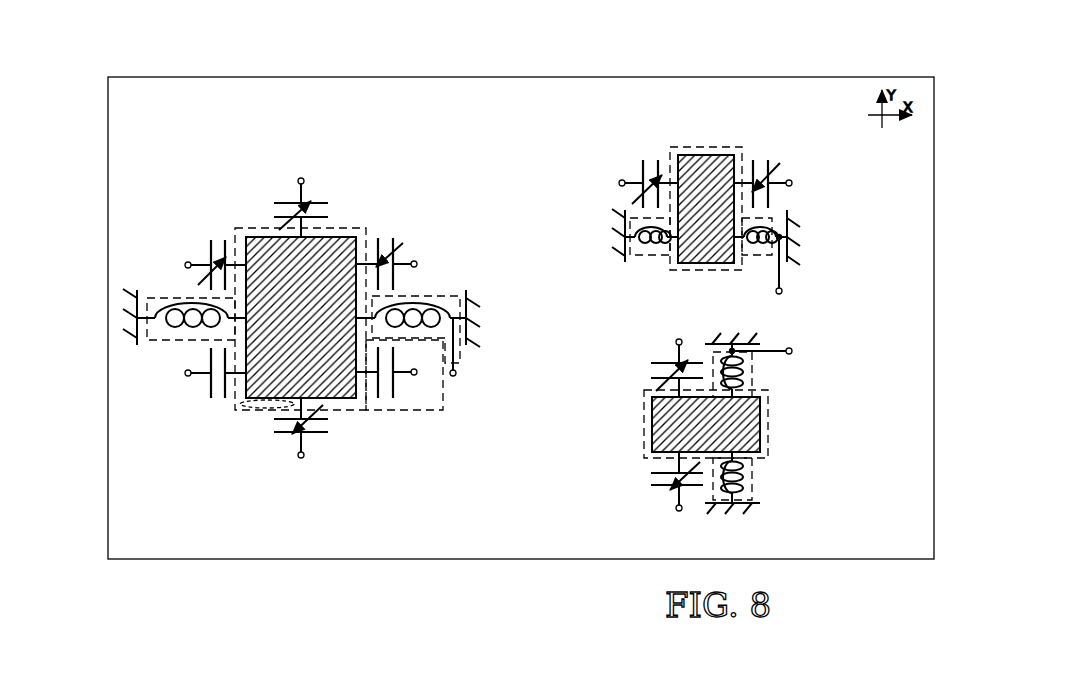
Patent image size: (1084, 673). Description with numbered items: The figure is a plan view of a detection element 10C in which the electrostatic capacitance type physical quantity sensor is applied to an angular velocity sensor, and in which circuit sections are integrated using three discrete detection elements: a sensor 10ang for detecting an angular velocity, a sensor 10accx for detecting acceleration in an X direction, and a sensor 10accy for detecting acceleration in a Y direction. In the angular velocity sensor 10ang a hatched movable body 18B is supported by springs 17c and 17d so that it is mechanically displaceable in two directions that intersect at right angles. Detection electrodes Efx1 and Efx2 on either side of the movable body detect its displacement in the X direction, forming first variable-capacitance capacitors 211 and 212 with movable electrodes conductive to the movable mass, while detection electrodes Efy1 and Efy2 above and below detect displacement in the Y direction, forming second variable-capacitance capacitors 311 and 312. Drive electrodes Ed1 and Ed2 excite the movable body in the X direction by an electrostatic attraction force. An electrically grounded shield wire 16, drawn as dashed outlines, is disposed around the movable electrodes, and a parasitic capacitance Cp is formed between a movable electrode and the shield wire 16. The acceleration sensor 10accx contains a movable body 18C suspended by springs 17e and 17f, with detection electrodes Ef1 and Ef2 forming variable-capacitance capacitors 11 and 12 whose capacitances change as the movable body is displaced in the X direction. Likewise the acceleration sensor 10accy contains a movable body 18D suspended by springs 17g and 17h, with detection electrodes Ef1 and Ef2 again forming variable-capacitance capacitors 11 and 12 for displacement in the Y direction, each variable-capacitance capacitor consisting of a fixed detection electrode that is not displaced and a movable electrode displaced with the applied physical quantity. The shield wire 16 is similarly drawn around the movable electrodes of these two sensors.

The detection element 10C is at (178, 77).
The angular velocity sensor 10ang is at (474, 198).
The X-direction acceleration sensor 10accx is at (820, 206).
The Y-direction acceleration sensor 10accy is at (810, 394).
The shield wire 16 is at (460, 296).
The movable mass body 18B is at (258, 236).
The movable body 18C is at (692, 153).
The movable mass body 18D is at (652, 440).
The parasitic capacitance Cp is at (258, 409).
The detection electrode Efx1 is at (195, 231).
The detection electrode Efx2 is at (408, 231).
The detection electrode Efy1 is at (340, 179).
The detection electrode Efy2 is at (340, 458).
The first variable-capacitance capacitor 211 is at (206, 256).
The first variable-capacitance capacitor 212 is at (382, 240).
The second variable-capacitance capacitor 311 is at (330, 216).
The second variable-capacitance capacitor 312 is at (316, 433).
The drive electrode Ed1 is at (212, 400).
The drive electrode Ed2 is at (396, 398).
The spring 17c is at (174, 336).
The spring 17d is at (417, 336).
The spring 17e is at (638, 250).
The spring 17f is at (789, 262).
The spring 17g is at (746, 372).
The spring 17h is at (746, 478).
The variable-capacitance capacitor 11 is at (652, 158).
The variable-capacitance capacitor 12 is at (762, 158).
The detection electrode 1 Ef1 is at (641, 316).
The detection electrode 2 Ef2 is at (706, 243).